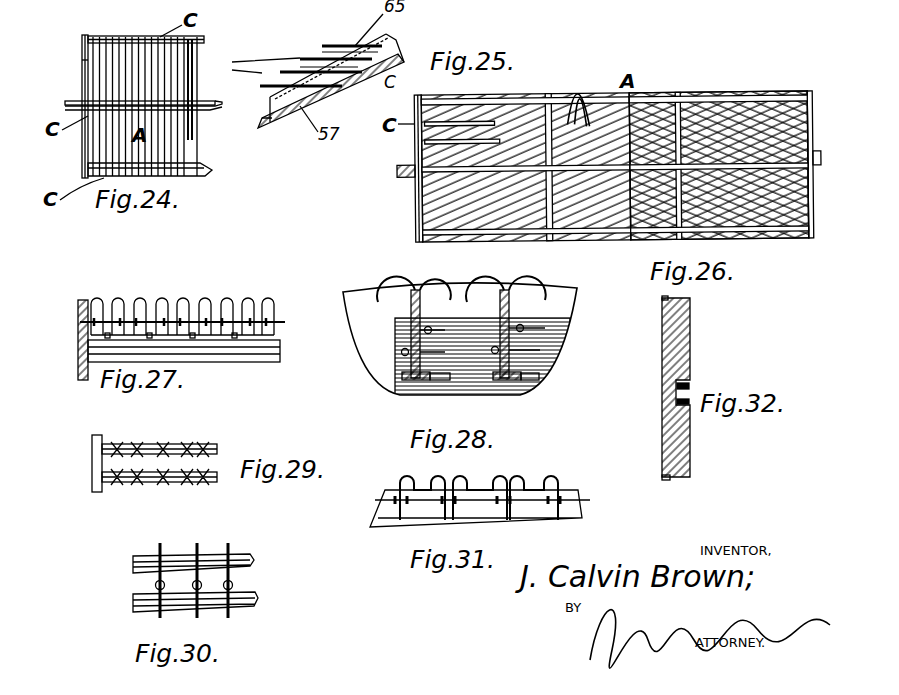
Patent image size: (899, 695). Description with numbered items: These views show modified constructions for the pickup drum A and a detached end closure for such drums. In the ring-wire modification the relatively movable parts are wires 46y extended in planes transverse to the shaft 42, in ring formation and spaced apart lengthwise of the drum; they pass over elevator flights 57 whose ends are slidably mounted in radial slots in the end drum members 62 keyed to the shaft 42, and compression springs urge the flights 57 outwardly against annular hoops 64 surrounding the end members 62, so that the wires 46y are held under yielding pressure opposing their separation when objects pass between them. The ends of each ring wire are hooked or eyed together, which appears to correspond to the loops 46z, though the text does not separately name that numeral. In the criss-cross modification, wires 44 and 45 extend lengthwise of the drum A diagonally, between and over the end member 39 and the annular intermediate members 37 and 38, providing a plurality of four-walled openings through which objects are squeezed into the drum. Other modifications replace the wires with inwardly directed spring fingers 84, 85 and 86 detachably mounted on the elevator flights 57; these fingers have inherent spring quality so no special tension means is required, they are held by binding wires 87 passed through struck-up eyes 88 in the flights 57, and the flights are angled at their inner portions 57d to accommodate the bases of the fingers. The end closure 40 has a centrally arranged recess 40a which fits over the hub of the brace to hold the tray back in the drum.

In FIG. 26, the intermediate frame member 37 is at (679, 241).
In FIG. 25, the intermediate frame member 38 is at (549, 241).
In FIG. 24, the end member 39 is at (84, 148).
In FIG. 27, the end member 39 is at (80, 375).
In FIG. 28, the end member 39 is at (560, 320).
In FIG. 32, the detachable closure 40 is at (680, 350).
In FIG. 32, the recess 40a is at (681, 398).
In FIG. 24, the shaft 42 is at (66, 103).
In FIG. 25, the shaft 42 is at (398, 171).
In FIG. 25, the relatively movable part 44 is at (526, 139).
In FIG. 25, the relatively movable part 45 is at (522, 167).
In FIG. 26, the relatively movable part 45 is at (675, 95).
In FIG. 24, the relatively movable parts 46y is at (190, 80).
In FIG. 30, the relatively movable parts 46y is at (230, 544).
In FIG. 30, the rod loops 46z is at (234, 580).
In FIG. 24, the elevator flight 57 is at (200, 164).
In FIG. 25, the elevator flight 57 is at (486, 136).
In FIG. 27, the elevator flight 57 is at (84, 332).
In FIG. 28, the elevator flight 57 is at (421, 318).
In FIG. 29, the elevator flight 57 is at (70, 382).
In FIG. 30, the elevator flight 57 is at (244, 556).
In FIG. 31, the elevator flight 57 is at (532, 508).
In FIG. 28, the angled inner portion of flight 57d is at (440, 378).
In FIG. 24, the end drum member 62 is at (80, 76).
In FIG. 24, the annular hoop 64 is at (88, 37).
In FIG. 27, the spring finger 84 is at (190, 300).
In FIG. 28, the spring finger 84 is at (492, 286).
In FIG. 29, the spring finger 84 is at (168, 442).
In FIG. 29, the spring finger 85 is at (166, 480).
In FIG. 31, the spring finger 86 is at (520, 478).
In FIG. 27, the binding wire 87 is at (285, 322).
In FIG. 28, the binding wire 87 is at (494, 348).
In FIG. 29, the binding wire 87 is at (214, 454).
In FIG. 31, the binding wire 87 is at (588, 500).
In FIG. 27, the struck-up eye 88 is at (268, 318).
In FIG. 28, the struck-up eye 88 is at (404, 350).
In FIG. 31, the struck-up eye 88 is at (564, 498).